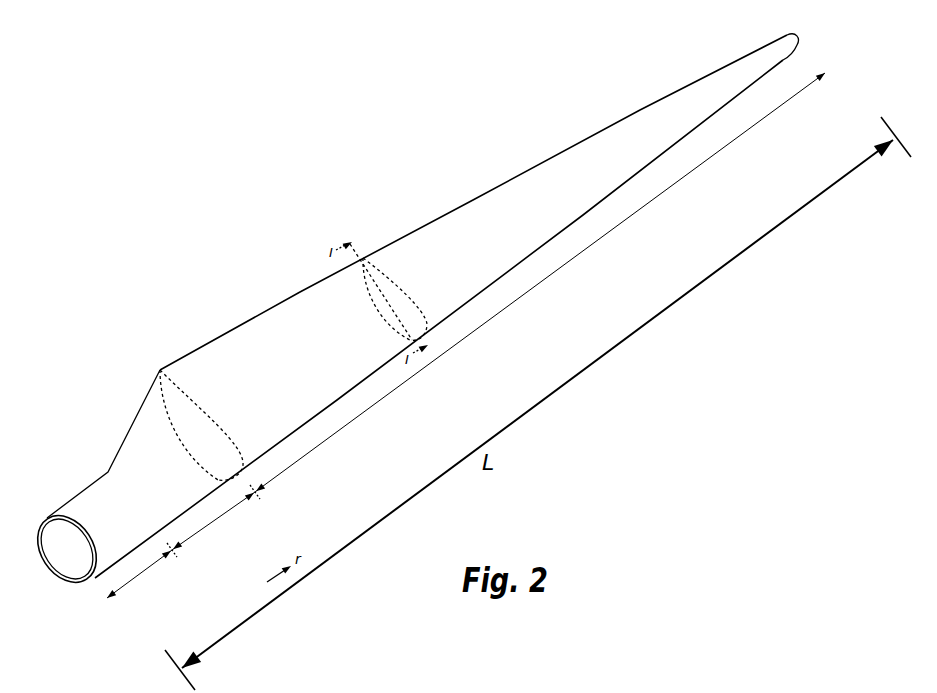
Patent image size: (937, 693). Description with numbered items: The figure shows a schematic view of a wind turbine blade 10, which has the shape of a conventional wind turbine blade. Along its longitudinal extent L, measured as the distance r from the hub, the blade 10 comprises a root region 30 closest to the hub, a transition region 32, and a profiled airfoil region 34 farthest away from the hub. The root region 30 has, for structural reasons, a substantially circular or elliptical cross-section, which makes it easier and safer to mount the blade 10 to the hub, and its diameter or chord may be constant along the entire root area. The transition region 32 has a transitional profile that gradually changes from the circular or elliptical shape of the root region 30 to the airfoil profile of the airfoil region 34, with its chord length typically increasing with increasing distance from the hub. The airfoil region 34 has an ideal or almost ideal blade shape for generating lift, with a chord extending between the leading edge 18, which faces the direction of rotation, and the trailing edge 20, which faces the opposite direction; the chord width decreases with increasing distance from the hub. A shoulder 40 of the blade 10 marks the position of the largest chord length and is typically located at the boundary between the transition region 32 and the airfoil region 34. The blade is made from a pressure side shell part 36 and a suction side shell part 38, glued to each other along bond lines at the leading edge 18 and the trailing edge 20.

The wind turbine blade 10 is at (281, 206).
The leading edge 18 is at (566, 228).
The trailing edge 20 is at (393, 241).
The root region 30 is at (143, 575).
The transition region 32 is at (217, 517).
The airfoil region 34 is at (482, 325).
The pressure side shell part 36 is at (63, 517).
The suction side shell part 38 is at (40, 528).
The shoulder 40 is at (160, 370).